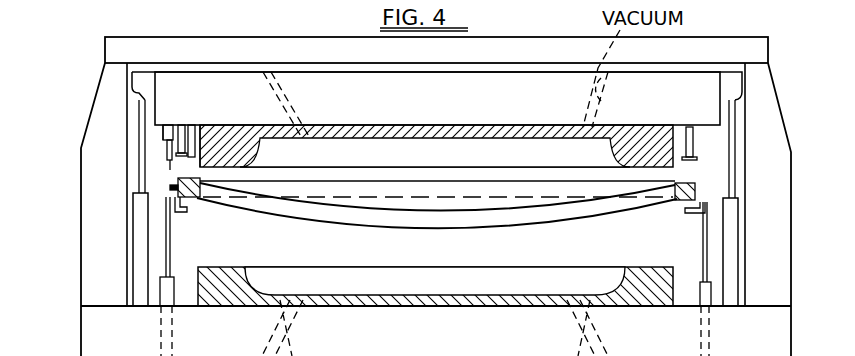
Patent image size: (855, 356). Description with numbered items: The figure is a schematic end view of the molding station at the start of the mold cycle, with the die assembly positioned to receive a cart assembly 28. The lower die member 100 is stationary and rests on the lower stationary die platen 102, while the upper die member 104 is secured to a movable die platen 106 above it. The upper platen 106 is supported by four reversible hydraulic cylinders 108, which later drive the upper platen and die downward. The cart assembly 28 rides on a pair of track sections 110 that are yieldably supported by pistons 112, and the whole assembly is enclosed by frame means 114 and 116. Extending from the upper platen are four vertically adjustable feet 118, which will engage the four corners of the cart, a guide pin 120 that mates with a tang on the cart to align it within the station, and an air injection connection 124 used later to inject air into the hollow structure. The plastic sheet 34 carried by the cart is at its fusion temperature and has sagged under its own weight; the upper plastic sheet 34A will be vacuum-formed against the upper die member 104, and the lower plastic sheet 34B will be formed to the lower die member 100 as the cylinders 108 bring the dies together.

The cart assembly 28 is at (192, 202).
The plastic sheet 34 is at (345, 222).
The upper plastic sheet 34A is at (515, 213).
The lower plastic sheet 34B is at (418, 230).
The lower die member 100 is at (395, 302).
The lower stationary die platen 102 is at (502, 351).
The upper die member 104 is at (558, 130).
The movable die platen 106 is at (480, 114).
The reversible hydraulic cylinders 108 is at (137, 277).
The track sections 110 is at (182, 210).
The pistons 112 is at (167, 292).
The frame means 114 is at (100, 203).
The frame means 116 is at (455, 61).
The vertically adjustable feet 118 is at (182, 125).
The guide pin 120 is at (163, 123).
The air injection connection 124 is at (198, 140).